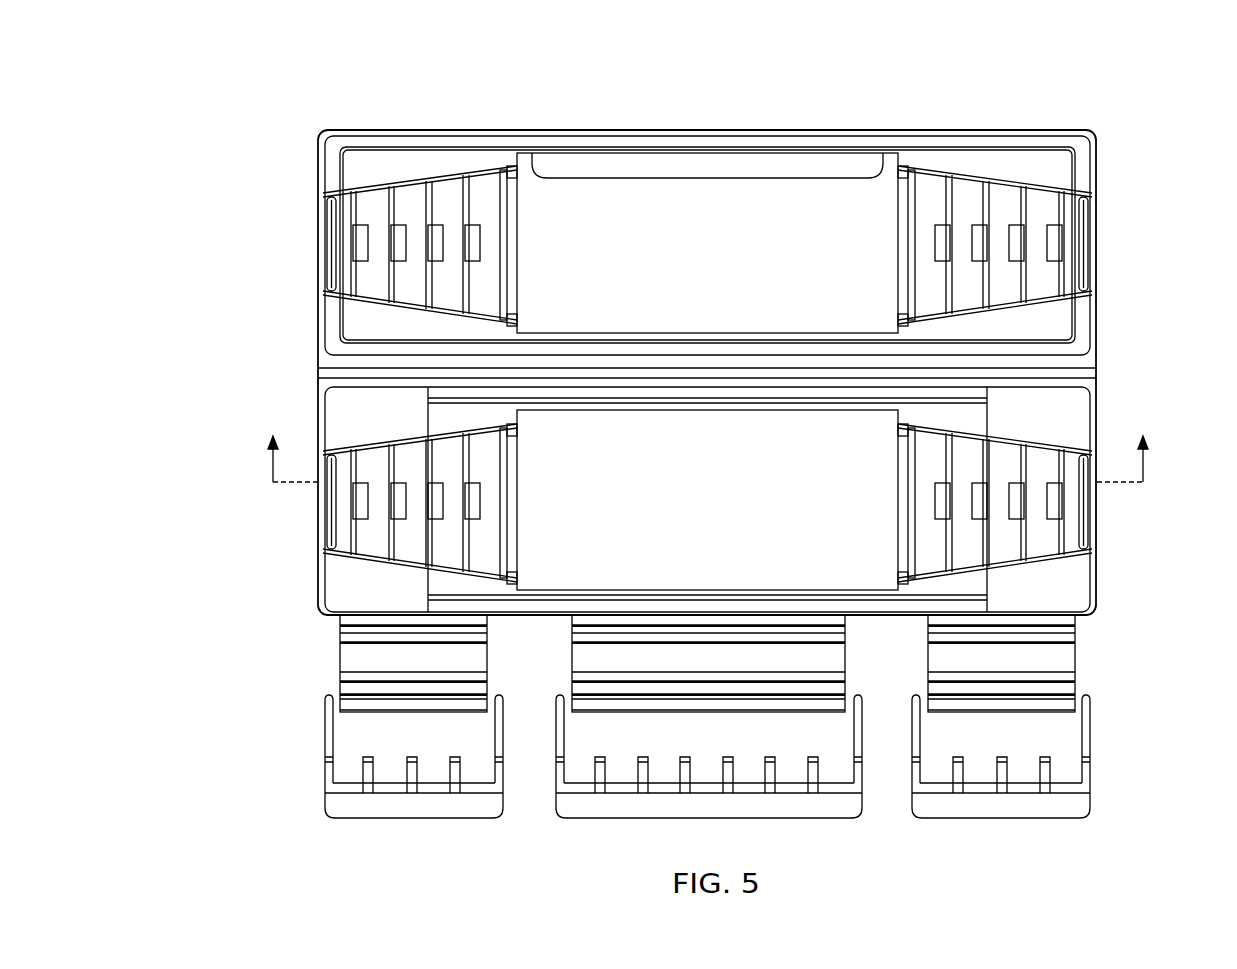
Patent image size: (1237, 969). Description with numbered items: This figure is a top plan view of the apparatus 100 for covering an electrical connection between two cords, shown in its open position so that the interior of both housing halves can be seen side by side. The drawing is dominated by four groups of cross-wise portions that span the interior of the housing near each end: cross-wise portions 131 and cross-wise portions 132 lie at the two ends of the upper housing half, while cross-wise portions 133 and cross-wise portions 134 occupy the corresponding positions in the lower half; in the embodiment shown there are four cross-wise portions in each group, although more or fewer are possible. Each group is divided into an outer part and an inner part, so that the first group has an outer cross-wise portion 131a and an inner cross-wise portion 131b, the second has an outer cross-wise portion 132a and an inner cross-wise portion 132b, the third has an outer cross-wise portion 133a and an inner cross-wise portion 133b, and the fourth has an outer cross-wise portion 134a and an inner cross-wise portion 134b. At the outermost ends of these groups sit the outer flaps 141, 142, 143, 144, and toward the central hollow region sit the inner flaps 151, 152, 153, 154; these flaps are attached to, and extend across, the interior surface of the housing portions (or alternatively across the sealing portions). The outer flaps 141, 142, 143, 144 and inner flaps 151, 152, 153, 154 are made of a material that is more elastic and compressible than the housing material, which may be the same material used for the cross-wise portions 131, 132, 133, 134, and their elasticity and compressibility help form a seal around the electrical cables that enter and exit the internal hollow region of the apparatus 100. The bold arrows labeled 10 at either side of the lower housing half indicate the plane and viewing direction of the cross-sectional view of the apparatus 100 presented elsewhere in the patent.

The apparatus 100 is at (272, 162).
The section view direction indicator 10 is at (711, 447).
The cross-wise portion 131 is at (367, 174).
The outer cross-wise portion 131a is at (345, 200).
The inner cross-wise portion 131b is at (472, 247).
The outer flap 141 is at (328, 250).
The inner flap 151 is at (502, 170).
The cross-wise portion 132 is at (1019, 172).
The outer cross-wise portion 132a is at (1057, 240).
The inner cross-wise portion 132b is at (947, 242).
The outer flap 142 is at (1090, 273).
The inner flap 152 is at (910, 252).
The cross-wise portion 133 is at (343, 570).
The outer cross-wise portion 133a is at (342, 518).
The inner cross-wise portion 133b is at (465, 538).
The outer flap 143 is at (328, 512).
The inner flap 153 is at (498, 536).
The cross-wise portion 134 is at (1067, 548).
The outer cross-wise portion 134a is at (1085, 525).
The inner cross-wise portion 134b is at (962, 528).
The outer flap 144 is at (1090, 512).
The inner flap 154 is at (920, 536).